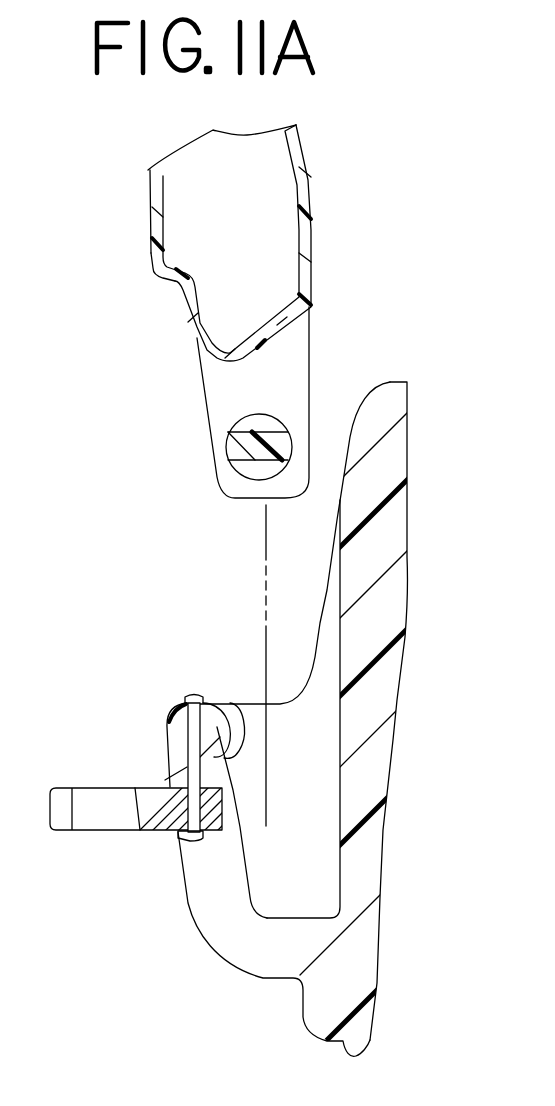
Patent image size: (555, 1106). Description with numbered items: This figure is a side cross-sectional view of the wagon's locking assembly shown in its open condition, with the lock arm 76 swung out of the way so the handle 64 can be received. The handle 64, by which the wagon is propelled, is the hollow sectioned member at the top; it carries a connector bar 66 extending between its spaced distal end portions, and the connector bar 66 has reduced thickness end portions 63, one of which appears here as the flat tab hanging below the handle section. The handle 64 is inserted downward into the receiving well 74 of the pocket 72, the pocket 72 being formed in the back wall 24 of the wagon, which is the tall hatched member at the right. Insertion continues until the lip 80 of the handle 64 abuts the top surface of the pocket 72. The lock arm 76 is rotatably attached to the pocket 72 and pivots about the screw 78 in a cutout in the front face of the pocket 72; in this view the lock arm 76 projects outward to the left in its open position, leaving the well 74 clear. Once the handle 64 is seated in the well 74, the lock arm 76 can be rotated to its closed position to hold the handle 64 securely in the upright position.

The back wall 24 is at (388, 532).
The reduced thickness end portions 63 is at (257, 435).
The handle 64 is at (312, 240).
The connector bar 66 is at (258, 414).
The pocket 72 is at (188, 903).
The receiving well 74 is at (230, 703).
The lock arm 76 is at (105, 810).
The screw 78 is at (193, 742).
The lip 80 is at (170, 284).